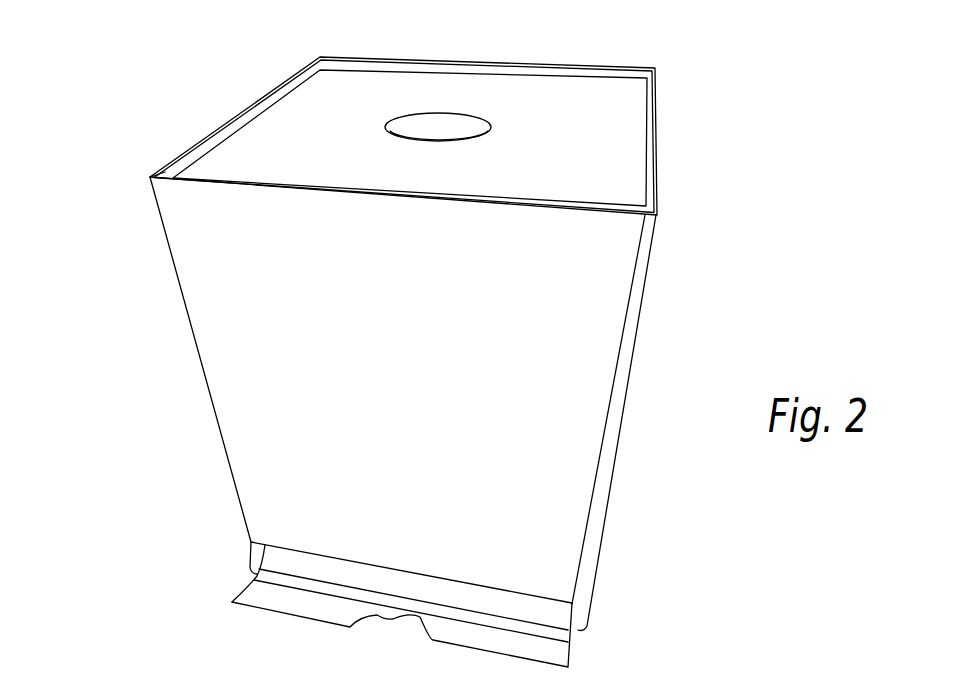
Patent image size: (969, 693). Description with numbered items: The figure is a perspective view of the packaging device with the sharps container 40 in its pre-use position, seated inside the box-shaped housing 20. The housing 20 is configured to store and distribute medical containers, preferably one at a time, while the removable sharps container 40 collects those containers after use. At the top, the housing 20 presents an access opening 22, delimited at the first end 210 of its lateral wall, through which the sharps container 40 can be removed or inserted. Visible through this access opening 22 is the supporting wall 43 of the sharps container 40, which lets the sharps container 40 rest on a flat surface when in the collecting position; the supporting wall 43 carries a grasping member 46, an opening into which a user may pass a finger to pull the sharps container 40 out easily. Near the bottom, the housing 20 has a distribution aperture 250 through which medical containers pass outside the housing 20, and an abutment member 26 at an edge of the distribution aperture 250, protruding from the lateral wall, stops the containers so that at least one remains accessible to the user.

The housing 20 is at (598, 277).
The access opening 22 is at (187, 150).
The first end of the lateral wall 210 is at (150, 175).
The sharps container 40 is at (475, 109).
The supporting wall 43 is at (410, 138).
The grasping member 46 is at (487, 120).
The distribution aperture 250 is at (280, 559).
The abutment member 26 is at (327, 610).